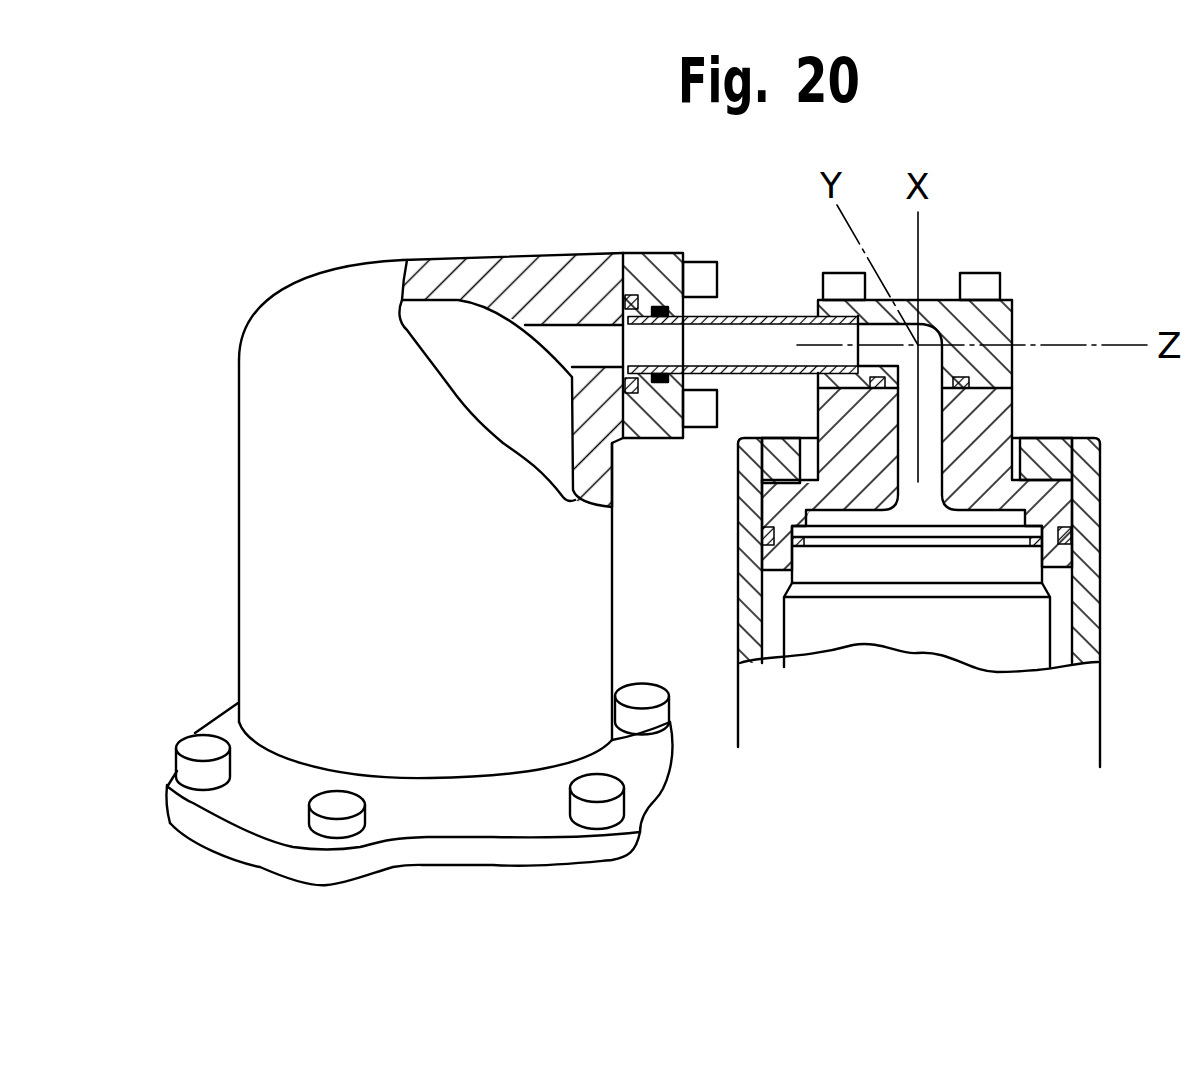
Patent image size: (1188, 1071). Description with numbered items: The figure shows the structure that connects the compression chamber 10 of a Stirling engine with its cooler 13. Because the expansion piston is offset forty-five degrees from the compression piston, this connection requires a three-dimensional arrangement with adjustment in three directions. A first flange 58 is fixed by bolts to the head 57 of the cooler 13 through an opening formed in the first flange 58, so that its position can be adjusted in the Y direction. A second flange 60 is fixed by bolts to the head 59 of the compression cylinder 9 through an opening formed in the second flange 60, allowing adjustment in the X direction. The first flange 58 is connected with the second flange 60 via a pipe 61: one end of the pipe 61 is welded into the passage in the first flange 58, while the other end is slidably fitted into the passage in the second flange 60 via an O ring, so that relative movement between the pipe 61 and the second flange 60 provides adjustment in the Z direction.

The compression cylinder 9 is at (553, 730).
The compression chamber 10 is at (518, 385).
The cooler 13 is at (1065, 717).
The head of the cooler 57 is at (985, 423).
The first flange 58 is at (997, 323).
The head of the compression cylinder 59 is at (472, 260).
The second flange 60 is at (648, 260).
The pipe 61 is at (752, 318).